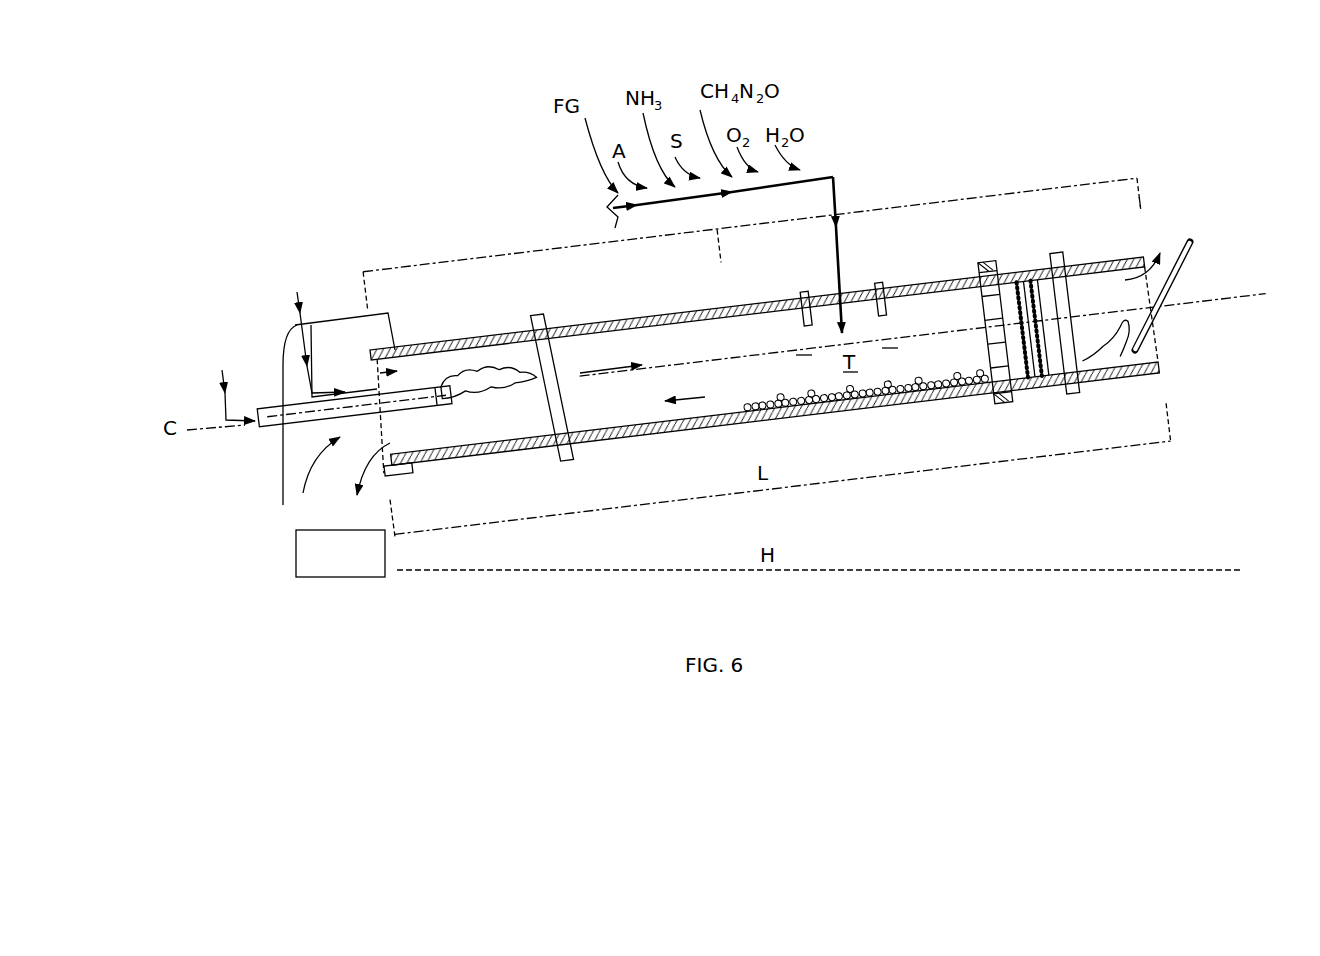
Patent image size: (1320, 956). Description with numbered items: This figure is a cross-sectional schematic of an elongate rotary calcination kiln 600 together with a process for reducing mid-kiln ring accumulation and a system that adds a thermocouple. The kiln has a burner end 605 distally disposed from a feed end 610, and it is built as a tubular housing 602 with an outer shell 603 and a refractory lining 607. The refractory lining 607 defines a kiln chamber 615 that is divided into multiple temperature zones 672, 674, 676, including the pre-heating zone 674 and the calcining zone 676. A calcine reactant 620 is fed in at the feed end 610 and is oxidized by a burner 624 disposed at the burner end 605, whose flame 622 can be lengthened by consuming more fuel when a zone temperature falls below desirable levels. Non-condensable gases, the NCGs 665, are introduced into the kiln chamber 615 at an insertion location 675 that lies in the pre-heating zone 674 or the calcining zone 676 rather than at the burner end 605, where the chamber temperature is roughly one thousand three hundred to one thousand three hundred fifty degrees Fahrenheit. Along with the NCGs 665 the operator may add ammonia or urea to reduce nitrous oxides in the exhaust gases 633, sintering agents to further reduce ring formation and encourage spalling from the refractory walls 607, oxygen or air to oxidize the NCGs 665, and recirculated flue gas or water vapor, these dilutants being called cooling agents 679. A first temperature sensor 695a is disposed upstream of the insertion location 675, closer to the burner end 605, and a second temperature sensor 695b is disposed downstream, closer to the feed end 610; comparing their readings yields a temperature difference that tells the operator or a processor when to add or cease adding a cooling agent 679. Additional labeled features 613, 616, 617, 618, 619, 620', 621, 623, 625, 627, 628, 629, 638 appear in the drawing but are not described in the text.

The elongate rotary calcination kiln 600 is at (280, 238).
The tubular housing 602 is at (594, 460).
The outer shell 603 is at (650, 436).
The burner end 605 is at (372, 368).
The refractory lining 607 is at (738, 302).
The feed end 610 is at (1178, 356).
The distributor plate 613 is at (985, 262).
The kiln chamber 615 is at (652, 352).
The inlet section 616 is at (338, 313).
The baffle plate 617 is at (543, 314).
The screen 618 is at (1042, 344).
The probe rod 619 is at (1190, 275).
The calcine reactant 620 is at (911, 395).
The sorbent pellets 620' is at (868, 409).
The catalyst screen 621 is at (1025, 390).
The flame 622 is at (488, 352).
The catalyst bed 623 is at (930, 365).
The burner 624 is at (430, 412).
The combustion zone 625 is at (591, 366).
The drain port 627 is at (390, 481).
The housing 628 is at (284, 486).
The fuel feed 629 is at (220, 370).
The exhaust gases 633 is at (1147, 262).
The controller 638 is at (360, 565).
The NCGs 665 is at (834, 176).
The temperature zone 672 is at (1072, 185).
The pre-heating zone 674 is at (910, 205).
The insertion location 675 is at (817, 278).
The calcining zone 676 is at (570, 247).
The cooling agents 679 is at (816, 170).
The first temperature sensor 695a is at (802, 320).
The second temperature sensor 695b is at (887, 310).